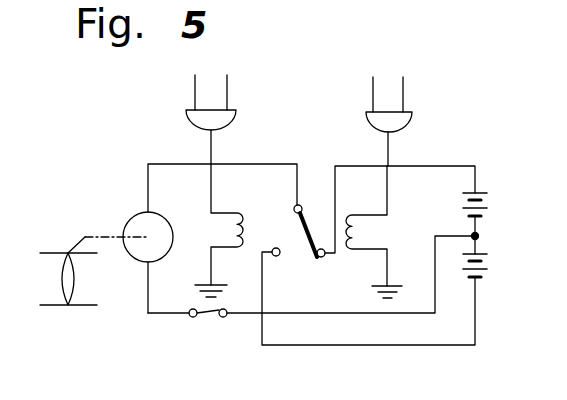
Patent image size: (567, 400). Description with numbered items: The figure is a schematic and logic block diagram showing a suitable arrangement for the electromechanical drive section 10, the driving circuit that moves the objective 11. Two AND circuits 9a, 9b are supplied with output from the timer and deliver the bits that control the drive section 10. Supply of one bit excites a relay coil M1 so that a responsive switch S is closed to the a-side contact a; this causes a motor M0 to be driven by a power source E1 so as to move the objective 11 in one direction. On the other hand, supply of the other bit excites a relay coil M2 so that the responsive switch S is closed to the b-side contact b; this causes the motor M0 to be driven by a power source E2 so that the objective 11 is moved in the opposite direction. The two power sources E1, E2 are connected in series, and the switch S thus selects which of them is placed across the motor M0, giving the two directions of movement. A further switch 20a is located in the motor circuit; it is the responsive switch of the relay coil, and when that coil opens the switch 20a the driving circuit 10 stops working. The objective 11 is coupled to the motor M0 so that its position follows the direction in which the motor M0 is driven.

The electromechanical drive section 10 is at (118, 181).
The objective 11 is at (49, 253).
The AND circuit 9a is at (408, 119).
The AND circuit 9b is at (232, 117).
The responsive switch of relay coil 20a is at (207, 318).
The motor M0 is at (124, 224).
The relay coil M1 is at (374, 232).
The relay coil M2 is at (228, 232).
The responsive switch S is at (294, 210).
The a-side contact a is at (322, 259).
The b-side contact b is at (277, 257).
The power source E1 is at (488, 205).
The power source E2 is at (488, 267).